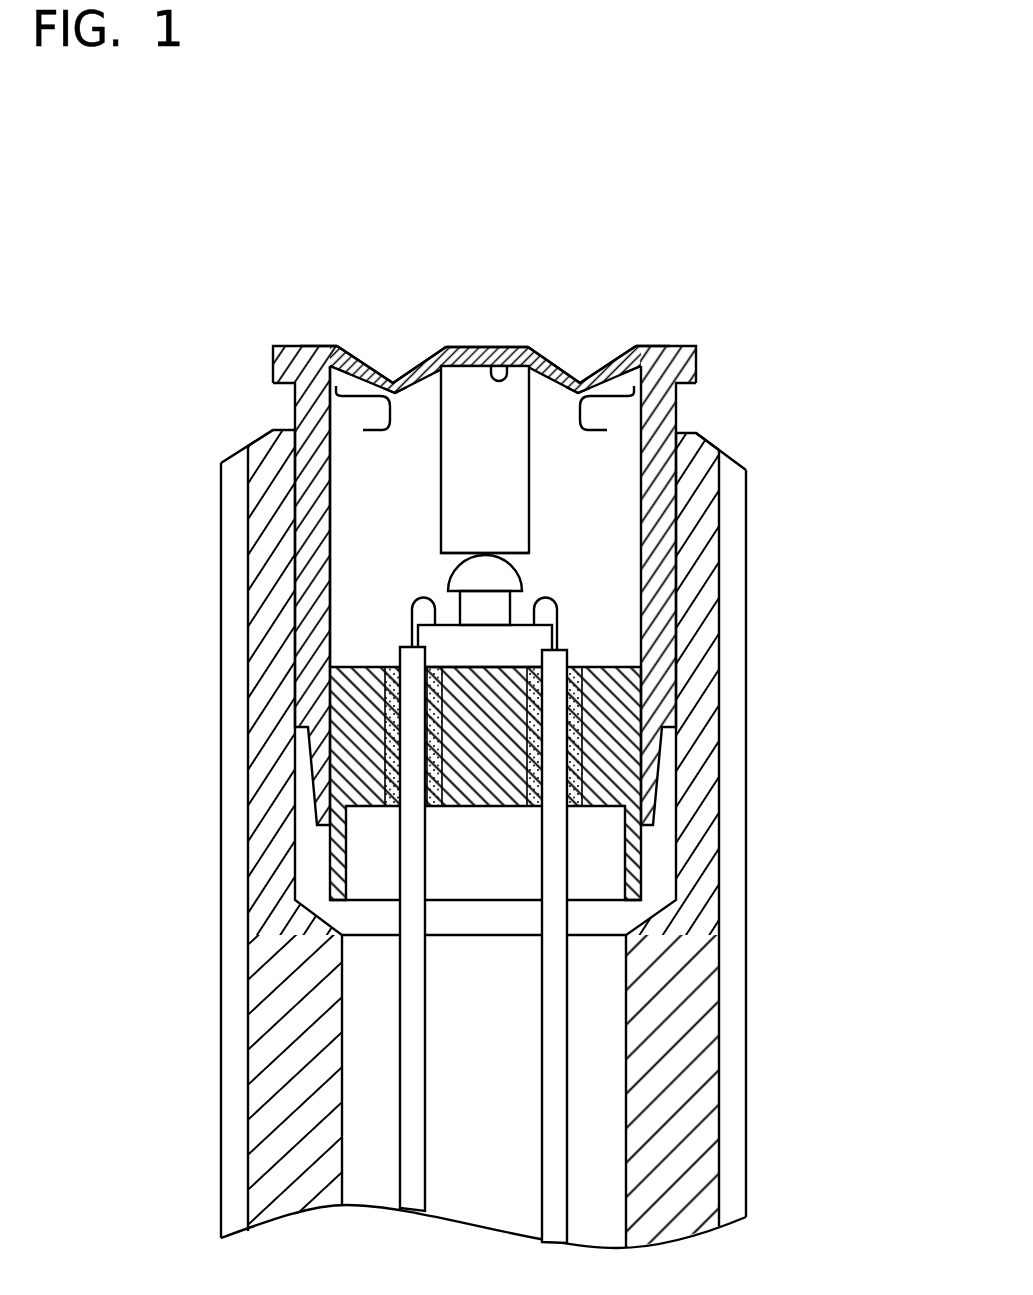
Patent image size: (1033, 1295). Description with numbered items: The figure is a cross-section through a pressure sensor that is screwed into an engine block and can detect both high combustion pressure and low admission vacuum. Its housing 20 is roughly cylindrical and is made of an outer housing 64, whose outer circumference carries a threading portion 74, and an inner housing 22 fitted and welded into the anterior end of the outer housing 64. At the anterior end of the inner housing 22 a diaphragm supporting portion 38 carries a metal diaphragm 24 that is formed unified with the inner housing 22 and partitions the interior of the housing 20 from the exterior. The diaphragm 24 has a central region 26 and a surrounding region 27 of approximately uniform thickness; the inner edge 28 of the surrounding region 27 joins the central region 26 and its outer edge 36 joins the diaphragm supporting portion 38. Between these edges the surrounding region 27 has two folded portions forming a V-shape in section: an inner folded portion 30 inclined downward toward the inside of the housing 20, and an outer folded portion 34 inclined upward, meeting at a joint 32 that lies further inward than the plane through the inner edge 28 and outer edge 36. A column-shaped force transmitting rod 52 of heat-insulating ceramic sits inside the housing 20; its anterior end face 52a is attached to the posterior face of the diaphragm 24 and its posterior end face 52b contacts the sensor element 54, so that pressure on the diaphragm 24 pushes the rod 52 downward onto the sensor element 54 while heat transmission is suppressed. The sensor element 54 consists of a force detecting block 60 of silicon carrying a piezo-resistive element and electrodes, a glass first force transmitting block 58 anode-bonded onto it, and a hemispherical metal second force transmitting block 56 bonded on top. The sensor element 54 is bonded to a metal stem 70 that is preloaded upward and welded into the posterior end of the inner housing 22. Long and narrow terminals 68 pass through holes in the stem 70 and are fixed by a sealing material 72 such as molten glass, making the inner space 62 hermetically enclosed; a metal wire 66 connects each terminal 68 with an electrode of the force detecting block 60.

The housing 20 is at (242, 428).
The inner housing 22 is at (312, 473).
The diaphragm 24 is at (465, 340).
The central region 26 is at (490, 345).
The surrounding region 27 is at (363, 430).
The inner edge 28 is at (438, 357).
The inner folded portion 30 is at (415, 360).
The joint 32 is at (402, 367).
The outer folded portion 34 is at (373, 357).
The outer edge 36 is at (335, 347).
The diaphragm supporting portion 38 is at (273, 360).
The force transmitting rod 52 is at (505, 468).
The anterior end face 52a is at (503, 365).
The posterior end face 52b is at (488, 552).
The sensor element 54 is at (656, 623).
The second force transmitting block 56 is at (508, 577).
The first force transmitting block 58 is at (490, 613).
The force detecting block 60 is at (530, 640).
The inner space 62 is at (343, 510).
The outer housing 64 is at (273, 557).
The metal wire 66 is at (408, 612).
The long and narrow terminal 68 is at (413, 690).
The stem 70 is at (350, 738).
The sealing material 72 is at (383, 770).
The threading portion 74 is at (232, 855).